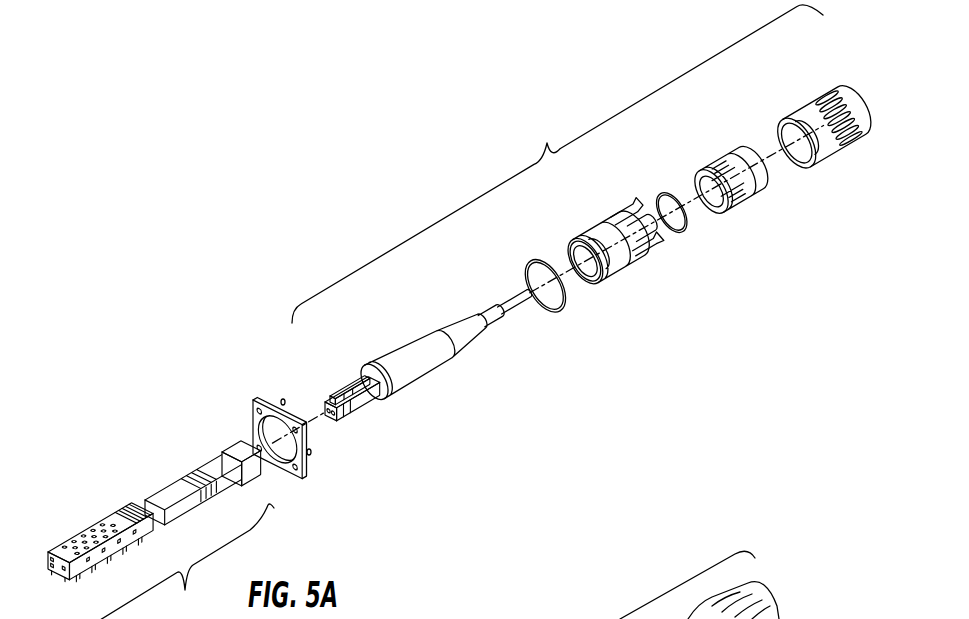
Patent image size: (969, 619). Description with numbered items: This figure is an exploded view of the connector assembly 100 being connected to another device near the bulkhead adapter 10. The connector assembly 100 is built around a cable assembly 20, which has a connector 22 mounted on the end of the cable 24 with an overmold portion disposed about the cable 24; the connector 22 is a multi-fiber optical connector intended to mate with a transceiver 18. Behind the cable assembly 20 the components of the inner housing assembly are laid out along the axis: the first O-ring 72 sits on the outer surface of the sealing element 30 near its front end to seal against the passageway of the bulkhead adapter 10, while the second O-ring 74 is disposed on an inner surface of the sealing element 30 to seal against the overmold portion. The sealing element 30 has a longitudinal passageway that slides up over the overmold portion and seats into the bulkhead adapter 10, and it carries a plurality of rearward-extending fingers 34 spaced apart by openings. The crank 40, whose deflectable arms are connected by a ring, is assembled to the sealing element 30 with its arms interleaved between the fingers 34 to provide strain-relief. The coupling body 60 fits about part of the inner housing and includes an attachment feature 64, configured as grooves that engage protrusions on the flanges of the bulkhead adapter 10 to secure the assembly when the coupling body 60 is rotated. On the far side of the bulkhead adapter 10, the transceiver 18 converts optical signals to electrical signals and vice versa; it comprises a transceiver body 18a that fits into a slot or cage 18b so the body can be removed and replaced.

The connector assembly 100 is at (557, 164).
The coupling body 60 is at (806, 100).
The attachment feature 64 is at (789, 152).
The crank 40 is at (710, 163).
The second O-ring 74 is at (659, 207).
The sealing element 30 is at (592, 242).
The fingers 34 is at (654, 248).
The first O-ring 72 is at (528, 276).
The cable 24 is at (512, 318).
The cable assembly 20 is at (392, 359).
The connector 22 is at (338, 393).
The bulkhead adapter 10 is at (251, 410).
The transceiver 18 is at (187, 561).
The transceiver body 18a is at (179, 491).
The cage 18b is at (93, 532).